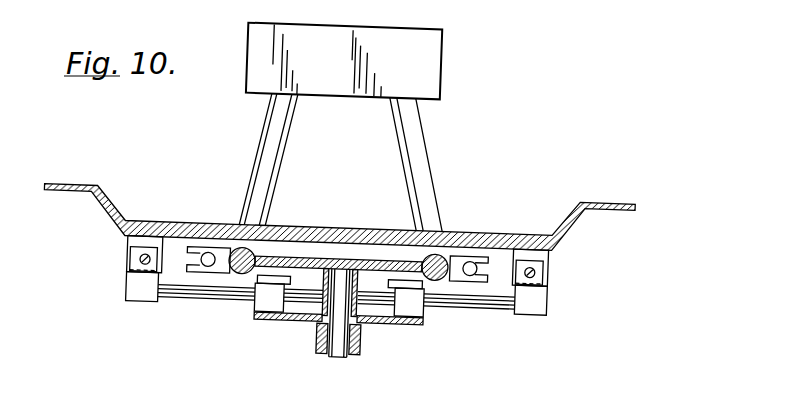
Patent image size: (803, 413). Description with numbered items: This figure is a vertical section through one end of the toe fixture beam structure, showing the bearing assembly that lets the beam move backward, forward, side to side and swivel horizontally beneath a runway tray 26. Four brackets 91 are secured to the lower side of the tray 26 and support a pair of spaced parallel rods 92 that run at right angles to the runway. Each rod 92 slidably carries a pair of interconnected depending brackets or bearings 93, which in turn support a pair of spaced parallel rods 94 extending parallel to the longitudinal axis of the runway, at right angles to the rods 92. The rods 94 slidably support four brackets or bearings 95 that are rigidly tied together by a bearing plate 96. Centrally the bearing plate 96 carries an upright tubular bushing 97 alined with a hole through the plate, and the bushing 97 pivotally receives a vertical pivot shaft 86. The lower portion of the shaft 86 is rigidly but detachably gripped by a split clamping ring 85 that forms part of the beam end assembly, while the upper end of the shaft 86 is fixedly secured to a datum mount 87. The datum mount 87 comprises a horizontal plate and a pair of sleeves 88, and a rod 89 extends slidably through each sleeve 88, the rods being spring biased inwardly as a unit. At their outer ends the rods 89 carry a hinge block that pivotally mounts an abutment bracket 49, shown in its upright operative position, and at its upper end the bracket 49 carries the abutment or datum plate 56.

The runway tray 26 is at (568, 207).
The abutment bracket 49 is at (270, 155).
The datum plate 56 is at (323, 96).
The split clamping ring 85 is at (362, 333).
The vertical pivot shaft 86 is at (341, 357).
The datum mount 87 is at (338, 258).
The sleeve 88 is at (230, 277).
The rod 89 is at (243, 277).
The bracket 91 is at (130, 249).
The rod 92 is at (140, 266).
The depending bracket or bearing 93 is at (140, 300).
The rod 94 is at (170, 303).
The bracket or bearing 95 is at (260, 302).
The bearing plate 96 is at (271, 316).
The tubular bushing 97 is at (307, 318).